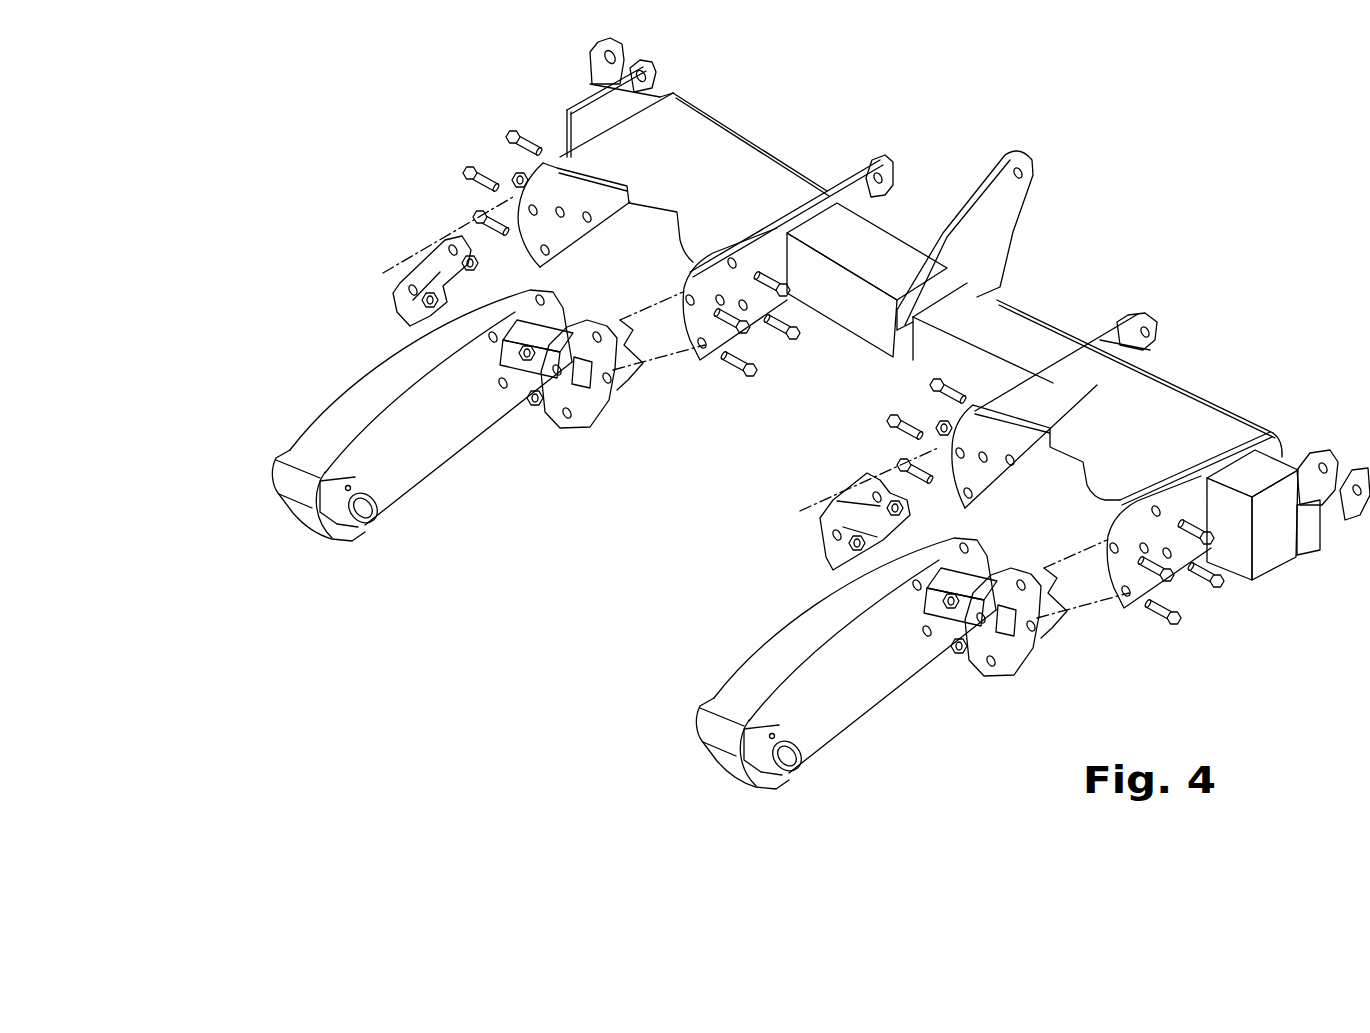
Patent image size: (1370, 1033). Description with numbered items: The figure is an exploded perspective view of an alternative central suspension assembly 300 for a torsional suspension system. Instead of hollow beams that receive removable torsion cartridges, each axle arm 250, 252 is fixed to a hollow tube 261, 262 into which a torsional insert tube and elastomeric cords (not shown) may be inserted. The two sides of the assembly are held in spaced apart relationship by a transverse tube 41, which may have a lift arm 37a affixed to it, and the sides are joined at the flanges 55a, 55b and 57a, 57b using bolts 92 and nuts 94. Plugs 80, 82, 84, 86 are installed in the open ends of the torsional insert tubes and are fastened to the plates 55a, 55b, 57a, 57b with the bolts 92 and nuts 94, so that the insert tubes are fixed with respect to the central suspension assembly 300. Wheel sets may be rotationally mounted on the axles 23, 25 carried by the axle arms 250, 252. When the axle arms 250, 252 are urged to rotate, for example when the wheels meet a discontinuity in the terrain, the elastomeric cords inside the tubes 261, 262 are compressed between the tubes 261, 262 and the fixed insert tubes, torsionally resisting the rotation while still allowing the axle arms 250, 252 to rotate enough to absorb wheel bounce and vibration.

The central suspension assembly 300 is at (1033, 298).
The transverse tube 41 is at (900, 240).
The lift arm 37a is at (997, 214).
The flange 55a is at (556, 183).
The flange 55b is at (746, 343).
The flange 57a is at (969, 443).
The flange 57b is at (1173, 560).
The bolts 92 is at (1177, 617).
The nuts 94 is at (533, 406).
The plug 86 is at (420, 262).
The plug 84 is at (597, 397).
The plug 82 is at (820, 537).
The plug 80 is at (1018, 640).
The hollow tube 261 is at (527, 368).
The hollow tube 262 is at (950, 616).
The axle arm 250 is at (340, 375).
The axle arm 252 is at (796, 663).
The axle 23 is at (355, 528).
The axle 25 is at (783, 772).